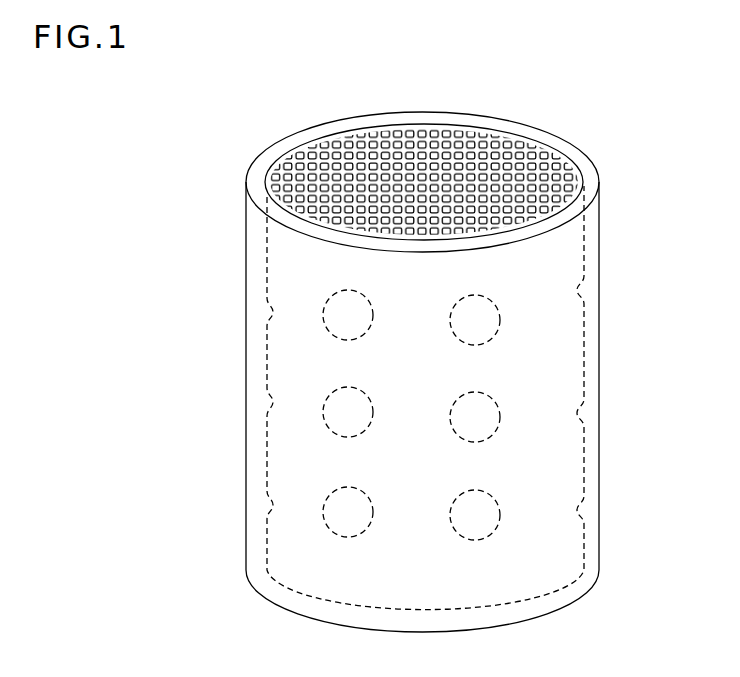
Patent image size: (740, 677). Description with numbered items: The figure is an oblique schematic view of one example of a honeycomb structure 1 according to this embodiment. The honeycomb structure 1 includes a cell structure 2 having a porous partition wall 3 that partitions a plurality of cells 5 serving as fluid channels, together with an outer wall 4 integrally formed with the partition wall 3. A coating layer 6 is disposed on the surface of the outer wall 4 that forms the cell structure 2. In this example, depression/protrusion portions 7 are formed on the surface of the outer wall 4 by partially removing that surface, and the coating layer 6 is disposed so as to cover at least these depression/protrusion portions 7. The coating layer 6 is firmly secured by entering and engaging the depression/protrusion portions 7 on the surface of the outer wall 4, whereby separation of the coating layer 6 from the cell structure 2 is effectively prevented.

The honeycomb structure 1 is at (600, 118).
The cell structure 2 is at (572, 258).
The partition wall 3 is at (530, 162).
The outer wall 4 is at (570, 460).
The cells 5 is at (508, 131).
The coating layer 6 is at (590, 182).
The depression/protrusion portion 7 is at (483, 330).